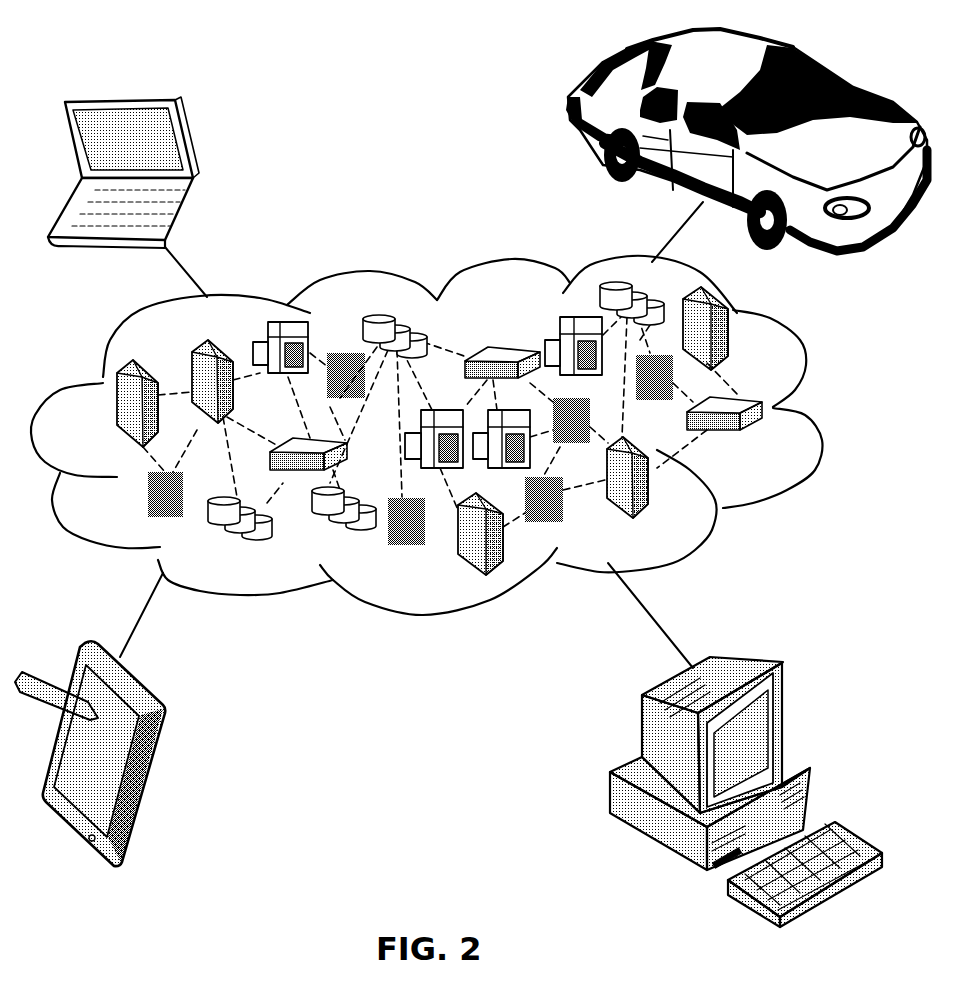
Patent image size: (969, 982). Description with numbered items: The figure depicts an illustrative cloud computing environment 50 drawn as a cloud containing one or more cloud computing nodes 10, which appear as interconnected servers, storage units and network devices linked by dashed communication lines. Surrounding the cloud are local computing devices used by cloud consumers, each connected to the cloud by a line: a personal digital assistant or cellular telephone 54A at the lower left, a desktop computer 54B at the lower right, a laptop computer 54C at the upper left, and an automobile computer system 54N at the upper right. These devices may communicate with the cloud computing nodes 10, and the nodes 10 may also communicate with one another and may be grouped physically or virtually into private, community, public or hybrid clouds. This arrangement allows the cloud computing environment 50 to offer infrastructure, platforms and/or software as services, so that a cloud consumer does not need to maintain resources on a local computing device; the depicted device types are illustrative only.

The cloud computing environment 50 is at (820, 415).
The cloud computing nodes 10 is at (776, 447).
The personal digital assistant or cellular telephone 54A is at (157, 742).
The desktop computer 54B is at (753, 657).
The laptop computer 54C is at (193, 143).
The automobile computer system 54N is at (570, 108).